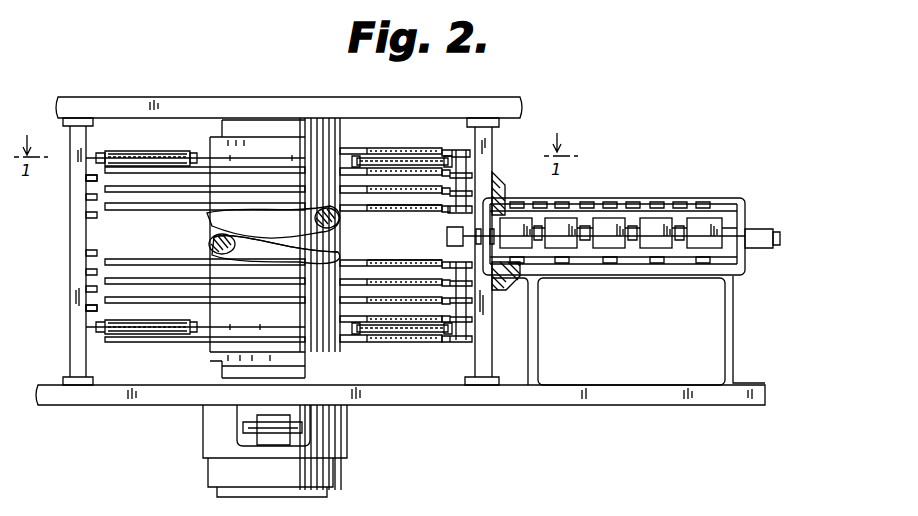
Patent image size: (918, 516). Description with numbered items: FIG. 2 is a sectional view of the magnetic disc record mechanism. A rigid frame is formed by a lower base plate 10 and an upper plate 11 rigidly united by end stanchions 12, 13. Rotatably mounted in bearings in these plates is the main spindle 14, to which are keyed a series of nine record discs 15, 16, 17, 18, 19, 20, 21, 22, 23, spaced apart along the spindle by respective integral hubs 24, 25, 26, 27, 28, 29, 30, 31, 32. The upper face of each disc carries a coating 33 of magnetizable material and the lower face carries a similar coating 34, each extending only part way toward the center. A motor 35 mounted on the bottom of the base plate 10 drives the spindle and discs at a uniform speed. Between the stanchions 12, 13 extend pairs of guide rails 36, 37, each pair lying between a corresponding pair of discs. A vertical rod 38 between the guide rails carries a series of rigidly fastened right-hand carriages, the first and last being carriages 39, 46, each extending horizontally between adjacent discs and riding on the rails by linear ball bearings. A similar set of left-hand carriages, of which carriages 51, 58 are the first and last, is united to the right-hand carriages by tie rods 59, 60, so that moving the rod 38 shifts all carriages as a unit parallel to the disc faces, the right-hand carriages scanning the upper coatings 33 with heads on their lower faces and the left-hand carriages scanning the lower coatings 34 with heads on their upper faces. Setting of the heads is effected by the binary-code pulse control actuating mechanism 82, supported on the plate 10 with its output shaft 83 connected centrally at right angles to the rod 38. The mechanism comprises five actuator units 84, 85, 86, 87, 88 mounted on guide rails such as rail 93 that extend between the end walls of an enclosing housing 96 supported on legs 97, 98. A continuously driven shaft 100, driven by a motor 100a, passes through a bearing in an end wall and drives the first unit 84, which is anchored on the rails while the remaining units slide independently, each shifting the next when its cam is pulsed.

The lower base plate 10 is at (430, 404).
The upper plate 11 is at (328, 98).
The end stanchion 12 is at (497, 140).
The end stanchion 13 is at (78, 141).
The main spindle 14 is at (328, 118).
The record disc 15 is at (346, 168).
The record disc 16 is at (354, 184).
The record disc 17 is at (354, 194).
The record disc 18 is at (367, 208).
The record disc 19 is at (348, 260).
The record disc 20 is at (352, 280).
The record disc 21 is at (356, 303).
The record disc 22 is at (360, 322).
The record disc 23 is at (374, 340).
The integral hub 24 is at (213, 156).
The integral hub 25 is at (210, 176).
The integral hub 26 is at (210, 194).
The integral hub 27 is at (215, 212).
The integral hub 28 is at (212, 272).
The integral hub 29 is at (212, 272).
The integral hub 30 is at (216, 290).
The integral hub 31 is at (210, 332).
The integral hub 32 is at (213, 336).
The magnetizable coating 33 is at (382, 263).
The magnetizable coating 34 is at (384, 210).
The motor 35 is at (352, 432).
The guide rail 36 is at (54, 184).
The guide rail 37 is at (86, 197).
The rod 38 is at (465, 148).
The carriage 39 is at (380, 154).
The carriage 46 is at (386, 334).
The carriage 51 is at (164, 152).
The carriage 58 is at (130, 330).
The tie rod 59 is at (256, 163).
The tie rod 60 is at (262, 145).
The binary-code pulse control actuating mechanism 82 is at (612, 198).
The output shaft 83 is at (472, 178).
The actuator unit 84 is at (704, 233).
The actuator unit 85 is at (648, 233).
The actuator unit 86 is at (601, 233).
The actuator unit 87 is at (554, 233).
The actuator unit 88 is at (516, 233).
The guide rail 93 is at (720, 206).
The enclosing housing 96 is at (672, 200).
The leg 97 is at (539, 336).
The leg 98 is at (732, 332).
The continuously driven shaft 100 is at (770, 250).
The motor 100a is at (754, 229).